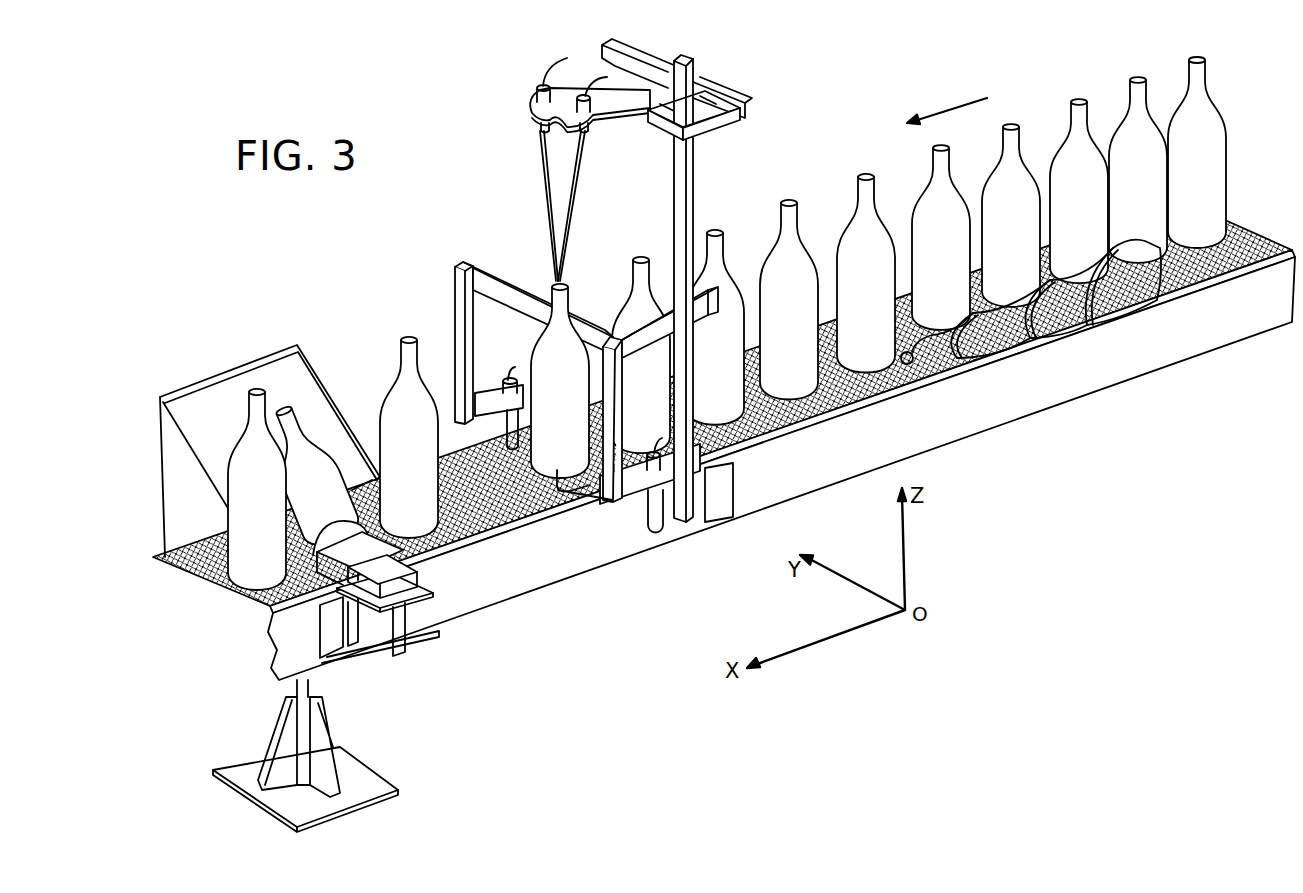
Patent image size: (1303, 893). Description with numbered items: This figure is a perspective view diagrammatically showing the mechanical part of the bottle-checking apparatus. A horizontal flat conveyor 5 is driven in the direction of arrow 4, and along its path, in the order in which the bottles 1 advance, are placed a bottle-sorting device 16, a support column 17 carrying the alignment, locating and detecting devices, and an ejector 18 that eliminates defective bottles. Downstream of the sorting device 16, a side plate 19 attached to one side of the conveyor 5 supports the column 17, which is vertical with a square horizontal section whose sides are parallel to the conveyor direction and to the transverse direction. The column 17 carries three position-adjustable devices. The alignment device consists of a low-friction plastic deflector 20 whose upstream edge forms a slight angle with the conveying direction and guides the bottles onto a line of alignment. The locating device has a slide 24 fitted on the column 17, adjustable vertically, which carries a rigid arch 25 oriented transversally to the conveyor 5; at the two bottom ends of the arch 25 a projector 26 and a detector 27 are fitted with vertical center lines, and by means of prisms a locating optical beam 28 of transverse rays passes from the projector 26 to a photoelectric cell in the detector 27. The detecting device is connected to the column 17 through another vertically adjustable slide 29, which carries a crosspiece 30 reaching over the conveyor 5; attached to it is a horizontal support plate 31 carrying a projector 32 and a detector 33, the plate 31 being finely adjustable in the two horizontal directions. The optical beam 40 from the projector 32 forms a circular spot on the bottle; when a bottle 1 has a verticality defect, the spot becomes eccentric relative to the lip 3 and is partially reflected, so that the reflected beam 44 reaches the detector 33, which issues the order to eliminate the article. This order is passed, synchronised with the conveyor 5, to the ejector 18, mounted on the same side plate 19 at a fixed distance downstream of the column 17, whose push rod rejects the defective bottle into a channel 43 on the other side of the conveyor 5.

The bottles 1 is at (1190, 107).
The lip 3 is at (552, 278).
The arrow 4 is at (948, 107).
The horizontal flat conveyor 5 is at (196, 583).
The bottle-sorting device 16 is at (1030, 313).
The support column 17 is at (690, 190).
The ejector 18 is at (434, 609).
The side plate 19 is at (512, 582).
The deflector 20 is at (600, 505).
The slide 24 is at (661, 300).
The rigid arch 25 is at (515, 308).
The projector 26 is at (528, 413).
The detector 27 is at (657, 507).
The optical beam 28 is at (560, 474).
The slide 29 is at (703, 112).
The crosspiece 30 is at (634, 60).
The horizontal support plate 31 is at (618, 92).
The projector 32 is at (535, 98).
The detector 33 is at (584, 133).
The optical beam 40 is at (548, 167).
The channel 43 is at (202, 398).
The reflected beam 44 is at (570, 218).